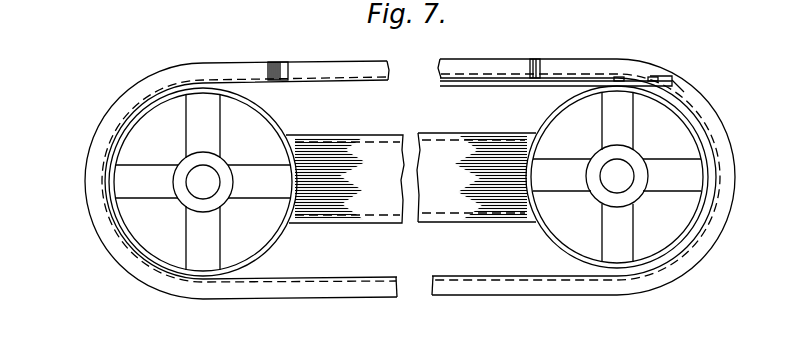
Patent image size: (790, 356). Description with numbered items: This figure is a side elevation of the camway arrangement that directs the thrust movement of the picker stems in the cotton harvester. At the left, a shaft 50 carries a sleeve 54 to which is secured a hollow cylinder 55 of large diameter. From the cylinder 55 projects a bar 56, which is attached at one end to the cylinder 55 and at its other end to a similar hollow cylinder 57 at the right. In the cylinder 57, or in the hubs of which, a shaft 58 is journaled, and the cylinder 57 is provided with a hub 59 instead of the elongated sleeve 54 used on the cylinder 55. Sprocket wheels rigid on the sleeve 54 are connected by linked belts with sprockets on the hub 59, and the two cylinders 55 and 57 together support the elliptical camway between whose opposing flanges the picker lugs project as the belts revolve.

The shaft 50 is at (203, 182).
The sleeve 54 is at (223, 197).
The hollow cylinder 55 is at (278, 114).
The bar 56 is at (411, 178).
The hollow cylinder 57 is at (574, 100).
The shaft 58 is at (612, 178).
The hub 59 is at (633, 192).